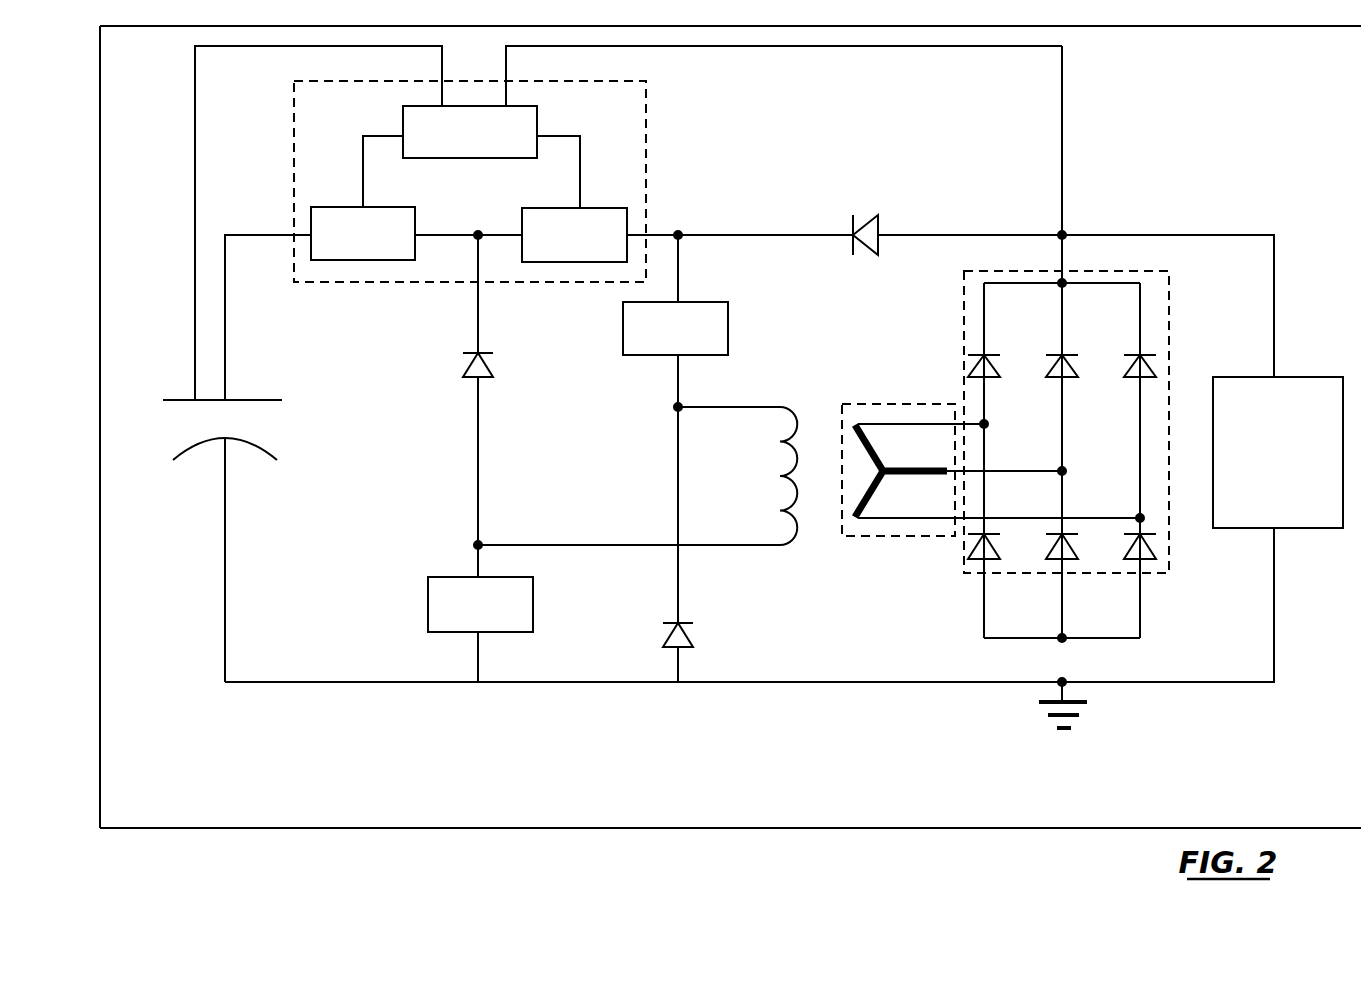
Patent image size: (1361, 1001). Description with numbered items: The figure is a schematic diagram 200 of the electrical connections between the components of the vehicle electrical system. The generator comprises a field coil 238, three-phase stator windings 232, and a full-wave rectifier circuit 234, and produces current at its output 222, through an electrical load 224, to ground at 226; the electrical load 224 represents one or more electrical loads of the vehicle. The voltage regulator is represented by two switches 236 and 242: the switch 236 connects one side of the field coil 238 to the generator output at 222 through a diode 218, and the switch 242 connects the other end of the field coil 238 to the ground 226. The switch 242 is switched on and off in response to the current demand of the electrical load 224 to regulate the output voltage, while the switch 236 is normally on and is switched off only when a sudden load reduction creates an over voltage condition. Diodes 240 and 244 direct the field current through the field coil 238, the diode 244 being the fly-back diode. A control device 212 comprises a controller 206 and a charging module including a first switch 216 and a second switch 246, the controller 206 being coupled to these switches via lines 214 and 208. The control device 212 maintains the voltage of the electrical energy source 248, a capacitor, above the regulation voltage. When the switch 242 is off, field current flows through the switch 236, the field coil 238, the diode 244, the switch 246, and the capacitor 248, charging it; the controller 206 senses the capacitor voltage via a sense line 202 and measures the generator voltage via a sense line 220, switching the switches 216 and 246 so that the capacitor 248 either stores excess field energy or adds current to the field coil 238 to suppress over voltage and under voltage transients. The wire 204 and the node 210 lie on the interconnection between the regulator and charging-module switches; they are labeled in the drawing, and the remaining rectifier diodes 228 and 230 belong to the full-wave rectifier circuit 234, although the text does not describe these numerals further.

The schematic diagram 200 is at (98, 99).
The sense line 202 is at (195, 188).
The line 204 is at (225, 283).
The controller 206 is at (403, 120).
The line 208 is at (363, 188).
The node 210 is at (505, 233).
The control device 212 is at (646, 106).
The line 214 is at (580, 188).
The first switch 216 is at (627, 213).
The diode 218 is at (873, 217).
The sense line 220 is at (1062, 135).
The output 222 is at (1142, 235).
The electrical load 224 is at (1289, 375).
The ground 226 is at (1274, 637).
The lower rectifier diode 228 is at (990, 558).
The upper rectifier diode 230 is at (987, 380).
The three-phase stator windings 232 is at (878, 537).
The full-wave rectifier circuit 234 is at (964, 318).
The switch 236 is at (728, 340).
The field coil 238 is at (793, 420).
The diode 240 is at (665, 645).
The switch 242 is at (428, 600).
The diode 244 is at (465, 377).
The second switch 246 is at (335, 260).
The electrical energy source 248 is at (262, 400).